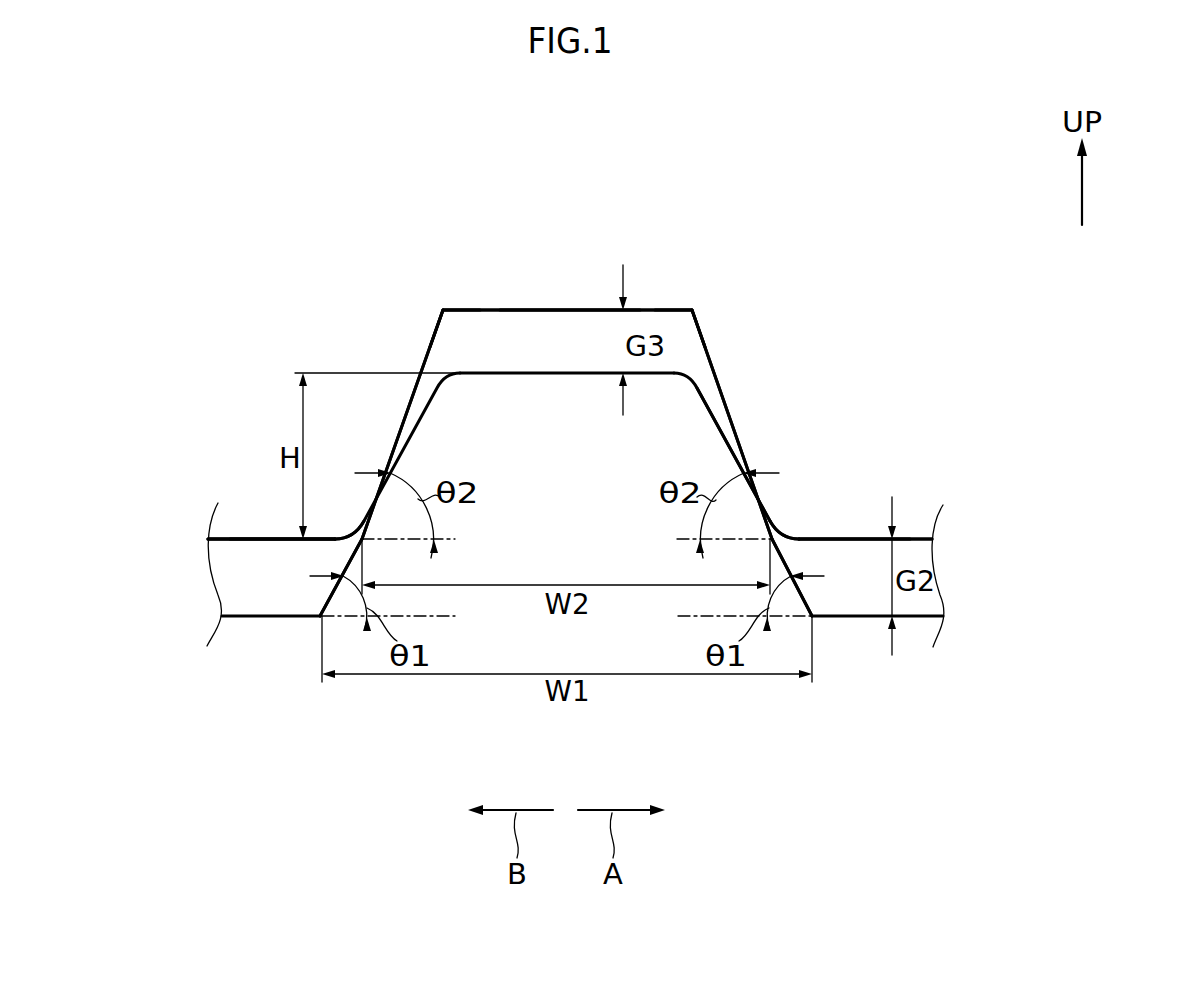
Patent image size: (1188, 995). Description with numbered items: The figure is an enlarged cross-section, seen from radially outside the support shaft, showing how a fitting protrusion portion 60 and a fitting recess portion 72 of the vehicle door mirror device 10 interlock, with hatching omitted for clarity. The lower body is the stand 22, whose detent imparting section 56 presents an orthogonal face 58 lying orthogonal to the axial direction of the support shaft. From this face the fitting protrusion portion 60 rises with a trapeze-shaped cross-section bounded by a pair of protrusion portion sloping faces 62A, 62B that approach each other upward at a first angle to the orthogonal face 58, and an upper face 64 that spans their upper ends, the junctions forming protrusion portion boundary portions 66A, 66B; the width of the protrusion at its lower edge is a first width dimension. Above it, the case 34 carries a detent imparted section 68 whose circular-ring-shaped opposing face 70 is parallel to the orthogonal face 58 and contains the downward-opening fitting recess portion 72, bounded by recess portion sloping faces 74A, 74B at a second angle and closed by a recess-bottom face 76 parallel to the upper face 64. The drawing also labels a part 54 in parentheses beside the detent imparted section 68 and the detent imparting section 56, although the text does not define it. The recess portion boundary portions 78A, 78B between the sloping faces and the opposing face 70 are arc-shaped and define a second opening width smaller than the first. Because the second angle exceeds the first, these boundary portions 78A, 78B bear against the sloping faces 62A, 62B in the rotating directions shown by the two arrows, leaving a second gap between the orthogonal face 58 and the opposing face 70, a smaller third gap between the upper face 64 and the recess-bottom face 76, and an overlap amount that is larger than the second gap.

The vehicle door mirror device 10 is at (816, 255).
The stand 22 is at (266, 613).
The case 34 is at (233, 553).
The flange portion 54 is at (591, 568).
The detent imparting section 56 is at (930, 617).
The orthogonal face 58 is at (300, 618).
The fitting protrusion portion 60 is at (703, 397).
The protrusion portion sloping face 62A is at (716, 426).
The protrusion portion sloping face 62B is at (410, 421).
The upper face 64 is at (517, 372).
The protrusion portion boundary portion 66A is at (687, 375).
The protrusion portion boundary portion 66B is at (441, 372).
The detent imparted section 68 is at (252, 543).
The opposing face 70 is at (276, 546).
The fitting recess portion 72 is at (507, 311).
The recess portion sloping face 74A is at (694, 330).
The recess portion sloping face 74B is at (443, 321).
The recess-bottom face 76 is at (571, 311).
The recess portion boundary portion 78A is at (765, 540).
The recess portion boundary portion 78B is at (372, 540).